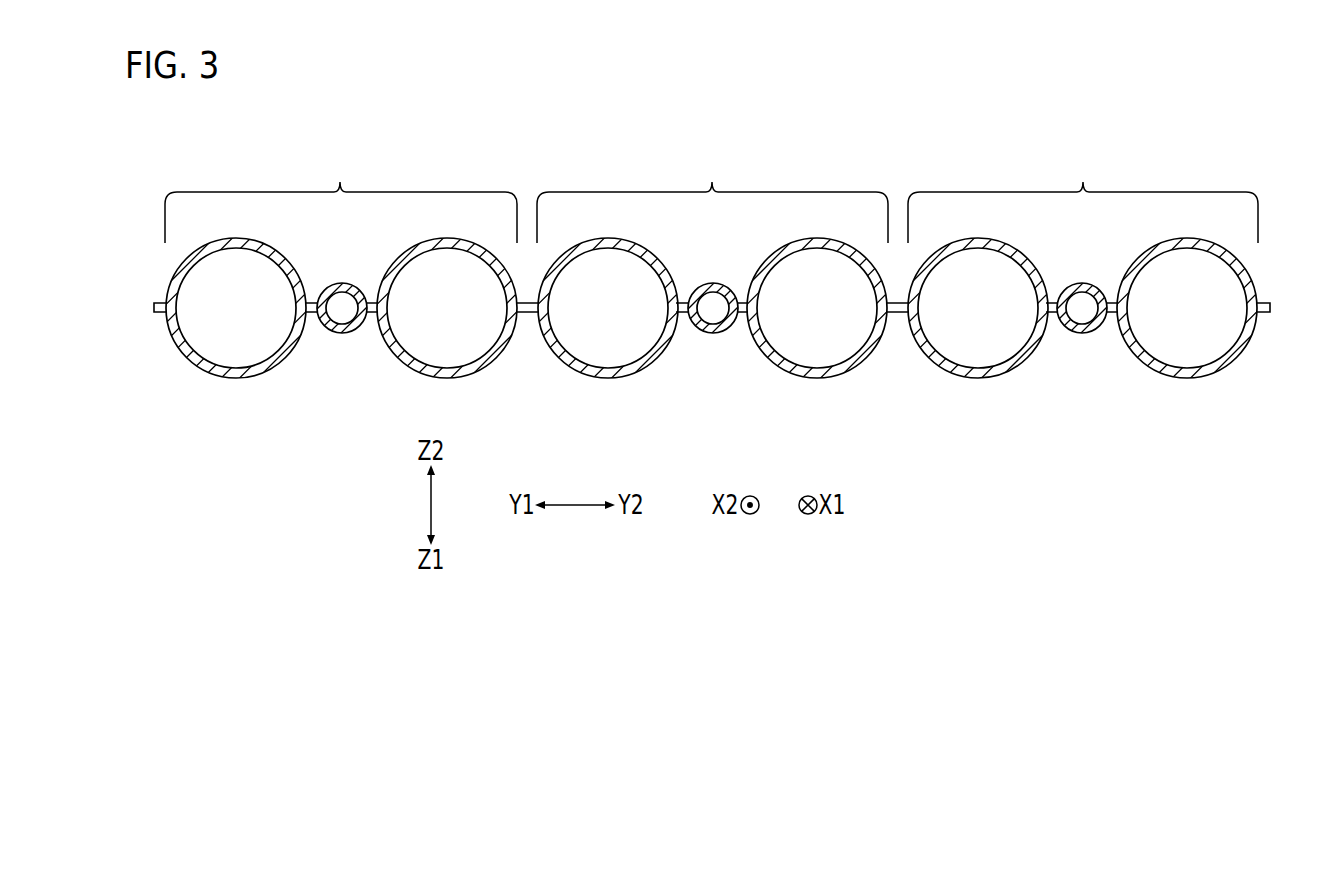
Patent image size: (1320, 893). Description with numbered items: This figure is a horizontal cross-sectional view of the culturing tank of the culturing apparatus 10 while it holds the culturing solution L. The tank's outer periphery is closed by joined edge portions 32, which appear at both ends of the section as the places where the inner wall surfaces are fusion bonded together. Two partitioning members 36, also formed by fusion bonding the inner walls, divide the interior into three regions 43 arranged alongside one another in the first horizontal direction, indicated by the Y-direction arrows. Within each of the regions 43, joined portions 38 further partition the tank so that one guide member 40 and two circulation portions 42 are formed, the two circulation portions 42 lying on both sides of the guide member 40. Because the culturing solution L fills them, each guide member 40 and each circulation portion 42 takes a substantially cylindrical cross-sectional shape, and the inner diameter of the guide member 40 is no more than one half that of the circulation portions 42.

The heat exchanger 10 is at (1210, 95).
The joined edge portions 32 is at (155, 313).
The partitioning members 36 is at (526, 313).
The joined portions 38 is at (311, 313).
The guide members 40 is at (341, 315).
The circulation portions 42 is at (241, 356).
The regions 43 is at (340, 183).
The culturing solution L is at (213, 338).